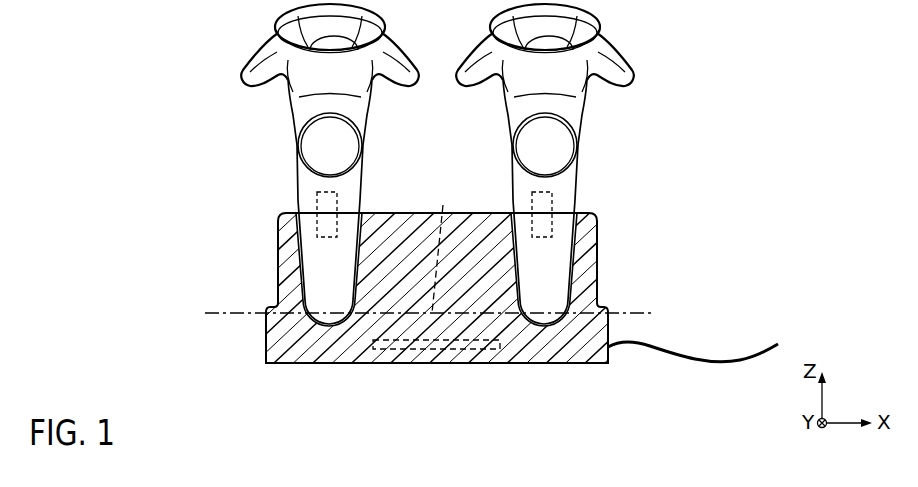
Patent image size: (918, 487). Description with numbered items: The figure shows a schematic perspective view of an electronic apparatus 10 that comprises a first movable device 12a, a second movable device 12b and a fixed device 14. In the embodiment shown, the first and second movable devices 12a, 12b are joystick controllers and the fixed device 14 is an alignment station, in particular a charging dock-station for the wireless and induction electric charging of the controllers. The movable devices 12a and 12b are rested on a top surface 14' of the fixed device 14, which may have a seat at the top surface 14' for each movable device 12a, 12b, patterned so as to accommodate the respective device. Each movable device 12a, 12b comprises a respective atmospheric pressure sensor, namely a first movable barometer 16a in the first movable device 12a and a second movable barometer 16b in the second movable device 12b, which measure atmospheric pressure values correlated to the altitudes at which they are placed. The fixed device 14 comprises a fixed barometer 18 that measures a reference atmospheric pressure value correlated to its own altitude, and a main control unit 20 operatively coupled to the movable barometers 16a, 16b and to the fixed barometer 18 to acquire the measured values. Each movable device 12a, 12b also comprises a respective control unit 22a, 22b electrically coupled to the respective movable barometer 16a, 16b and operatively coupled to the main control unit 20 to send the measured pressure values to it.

The electronic apparatus 10 is at (750, 80).
The first movable device 12a is at (319, 164).
The second movable device 12b is at (568, 164).
The fixed device 14 is at (433, 274).
The top surface 14' is at (442, 178).
The first movable barometer 16a is at (326, 315).
The second movable barometer 16b is at (573, 297).
The fixed barometer 18 is at (436, 248).
The main control unit 20 is at (440, 352).
The control unit 22a is at (324, 237).
The control unit 22b is at (553, 231).